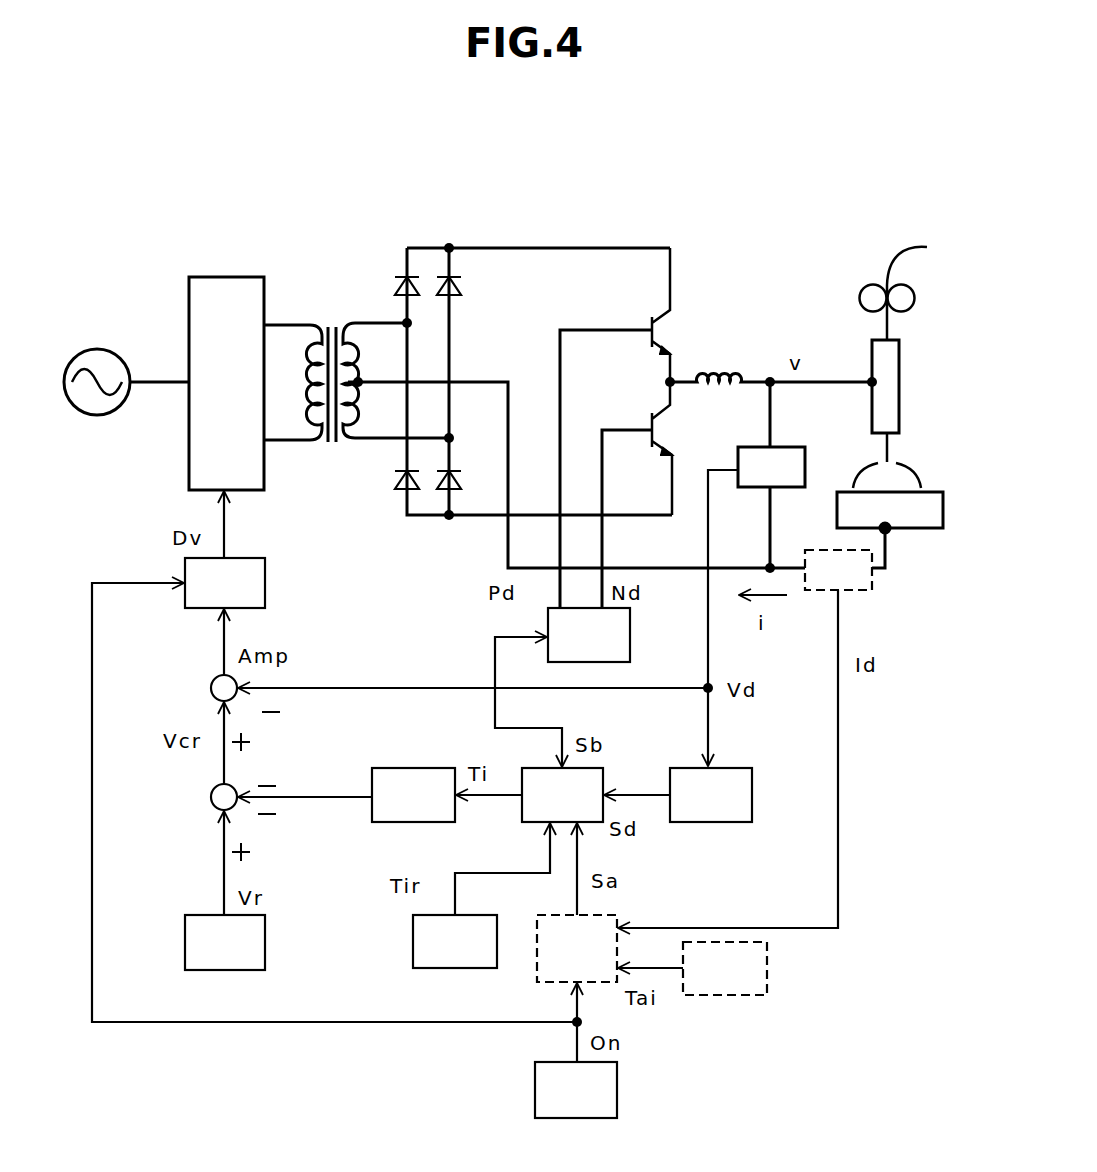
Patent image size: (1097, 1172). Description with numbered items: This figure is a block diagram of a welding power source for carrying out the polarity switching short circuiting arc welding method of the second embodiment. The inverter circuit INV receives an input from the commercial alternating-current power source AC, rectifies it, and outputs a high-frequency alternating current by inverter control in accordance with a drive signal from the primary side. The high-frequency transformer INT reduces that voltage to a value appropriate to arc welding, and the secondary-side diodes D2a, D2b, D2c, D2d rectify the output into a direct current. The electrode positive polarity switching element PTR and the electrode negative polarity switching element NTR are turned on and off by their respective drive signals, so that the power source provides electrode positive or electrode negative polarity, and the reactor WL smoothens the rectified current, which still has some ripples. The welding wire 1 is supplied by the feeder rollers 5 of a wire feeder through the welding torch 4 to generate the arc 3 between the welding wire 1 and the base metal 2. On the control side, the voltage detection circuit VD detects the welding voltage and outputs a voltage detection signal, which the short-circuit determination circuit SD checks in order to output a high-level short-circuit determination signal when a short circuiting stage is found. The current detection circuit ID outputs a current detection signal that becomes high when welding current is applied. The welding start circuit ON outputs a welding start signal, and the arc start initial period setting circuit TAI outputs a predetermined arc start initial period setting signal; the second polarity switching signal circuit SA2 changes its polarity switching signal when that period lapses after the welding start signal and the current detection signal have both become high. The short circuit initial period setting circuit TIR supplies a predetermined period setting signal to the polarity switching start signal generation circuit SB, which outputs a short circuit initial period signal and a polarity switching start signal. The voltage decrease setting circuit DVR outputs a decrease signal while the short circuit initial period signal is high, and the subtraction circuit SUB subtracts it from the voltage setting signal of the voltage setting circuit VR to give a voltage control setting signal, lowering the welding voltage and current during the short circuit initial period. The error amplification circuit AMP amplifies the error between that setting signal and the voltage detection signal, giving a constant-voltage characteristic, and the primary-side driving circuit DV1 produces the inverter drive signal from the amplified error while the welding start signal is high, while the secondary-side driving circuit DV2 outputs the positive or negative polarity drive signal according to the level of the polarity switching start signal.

The welding wire 1 is at (890, 447).
The base metal 2 is at (927, 530).
The arc 3 is at (860, 479).
The welding torch 4 is at (872, 350).
The feeder rollers 5 is at (858, 297).
The commercial alternating-current power source AC is at (90, 346).
The inverter circuit INV is at (230, 276).
The high-frequency transformer INT is at (330, 322).
The secondary-side diode D2a is at (394, 288).
The secondary-side diode D2b is at (462, 288).
The secondary-side diode D2c is at (443, 488).
The secondary-side diode D2d is at (394, 486).
The electrode positive polarity switching element PTR is at (615, 428).
The electrode negative polarity switching element NTR is at (619, 495).
The reactor WL is at (741, 354).
The voltage detection circuit VD is at (771, 467).
The current detection circuit ID is at (838, 570).
The primary-side driving circuit DV1 is at (225, 583).
The secondary-side driving circuit DV2 is at (589, 635).
The error amplification circuit AMP is at (181, 689).
The subtraction circuit SUB is at (181, 798).
The voltage decrease setting circuit DVR is at (413, 795).
The polarity switching start signal generation circuit SB is at (562, 795).
The short-circuit determination circuit SD is at (711, 795).
The voltage setting circuit VR is at (225, 942).
The short circuit initial period setting circuit TIR is at (455, 941).
The second polarity switching signal circuit SA2 is at (577, 948).
The arc start initial period setting circuit TAI is at (725, 968).
The welding start circuit ON is at (576, 1090).